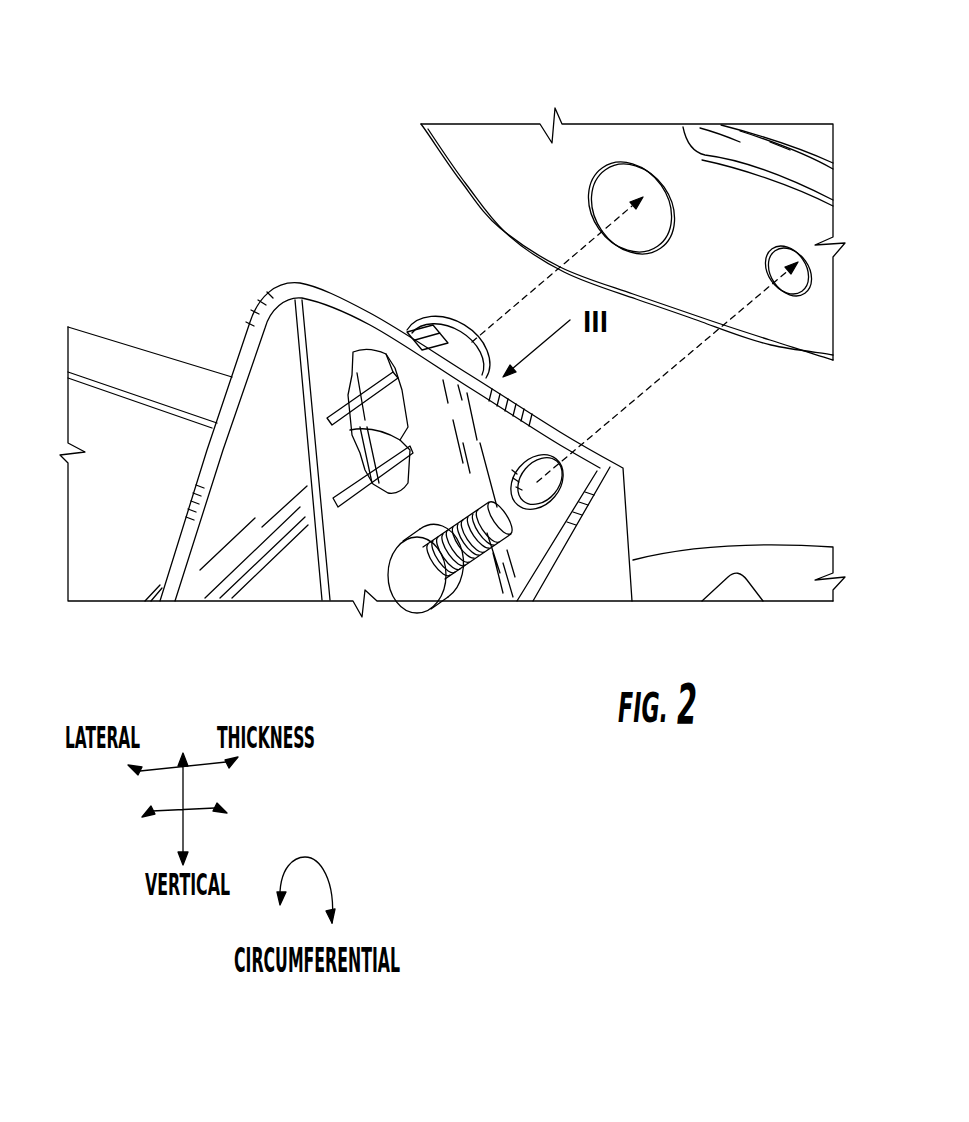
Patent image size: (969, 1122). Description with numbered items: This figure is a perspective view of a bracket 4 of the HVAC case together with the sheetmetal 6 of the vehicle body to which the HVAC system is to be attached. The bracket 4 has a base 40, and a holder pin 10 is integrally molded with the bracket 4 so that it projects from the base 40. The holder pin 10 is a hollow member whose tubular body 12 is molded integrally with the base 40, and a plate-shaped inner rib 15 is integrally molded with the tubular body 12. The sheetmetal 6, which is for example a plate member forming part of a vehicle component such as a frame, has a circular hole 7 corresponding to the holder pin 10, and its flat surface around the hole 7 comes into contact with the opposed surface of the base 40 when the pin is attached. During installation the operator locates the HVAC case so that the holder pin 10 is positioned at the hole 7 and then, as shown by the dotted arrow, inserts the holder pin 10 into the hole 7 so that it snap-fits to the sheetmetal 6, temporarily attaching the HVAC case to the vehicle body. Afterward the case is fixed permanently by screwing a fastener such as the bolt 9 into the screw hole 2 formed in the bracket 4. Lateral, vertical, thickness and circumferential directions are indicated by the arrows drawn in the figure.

The bracket 4 is at (240, 157).
The sheetmetal 6 is at (645, 143).
The circular hole 7 is at (620, 178).
The screw hole 2 is at (788, 253).
The holder pin 10 is at (427, 260).
The base 40 is at (317, 315).
The tubular body 12 is at (418, 323).
The inner rib 15 is at (367, 420).
The bolt 9 is at (423, 613).